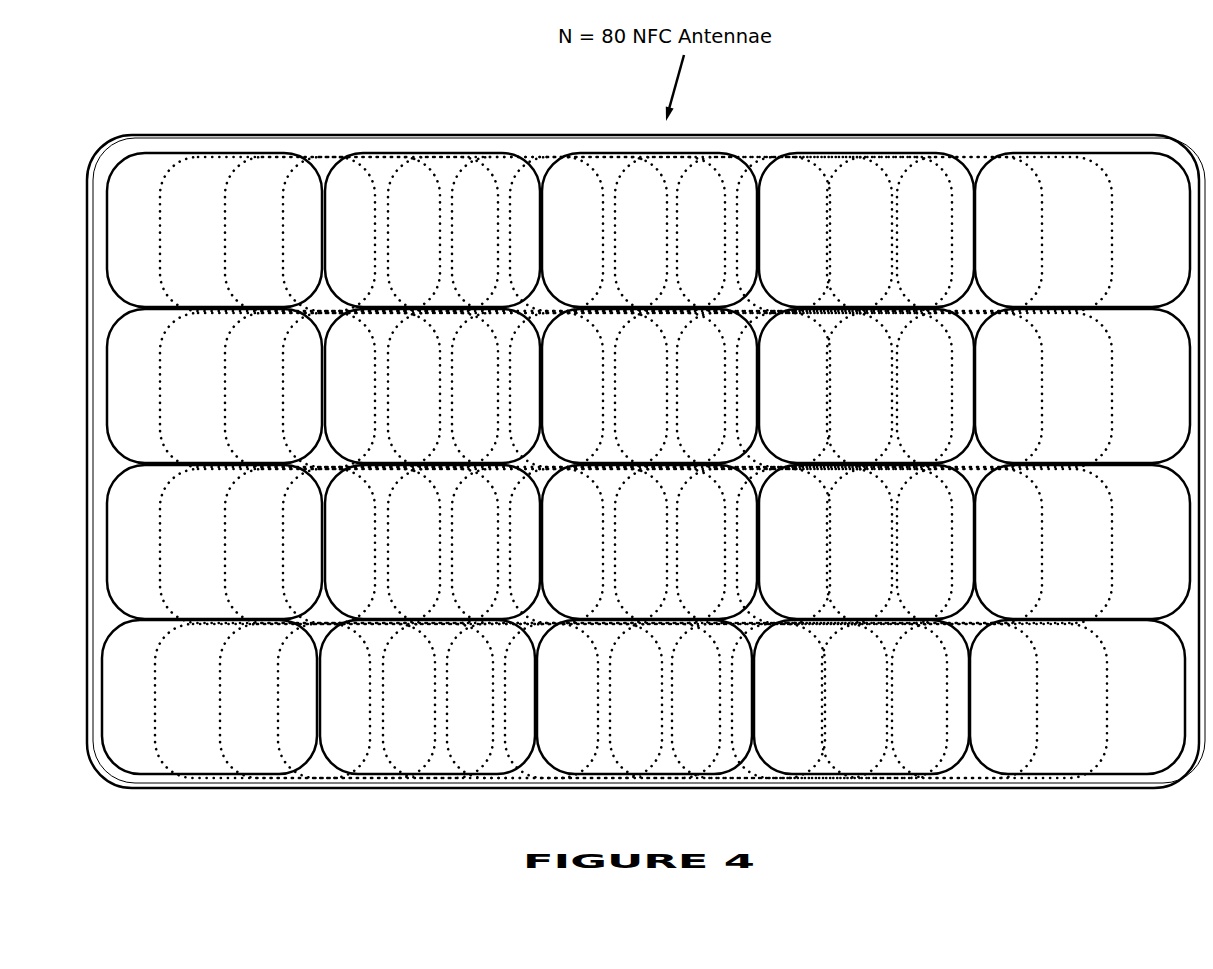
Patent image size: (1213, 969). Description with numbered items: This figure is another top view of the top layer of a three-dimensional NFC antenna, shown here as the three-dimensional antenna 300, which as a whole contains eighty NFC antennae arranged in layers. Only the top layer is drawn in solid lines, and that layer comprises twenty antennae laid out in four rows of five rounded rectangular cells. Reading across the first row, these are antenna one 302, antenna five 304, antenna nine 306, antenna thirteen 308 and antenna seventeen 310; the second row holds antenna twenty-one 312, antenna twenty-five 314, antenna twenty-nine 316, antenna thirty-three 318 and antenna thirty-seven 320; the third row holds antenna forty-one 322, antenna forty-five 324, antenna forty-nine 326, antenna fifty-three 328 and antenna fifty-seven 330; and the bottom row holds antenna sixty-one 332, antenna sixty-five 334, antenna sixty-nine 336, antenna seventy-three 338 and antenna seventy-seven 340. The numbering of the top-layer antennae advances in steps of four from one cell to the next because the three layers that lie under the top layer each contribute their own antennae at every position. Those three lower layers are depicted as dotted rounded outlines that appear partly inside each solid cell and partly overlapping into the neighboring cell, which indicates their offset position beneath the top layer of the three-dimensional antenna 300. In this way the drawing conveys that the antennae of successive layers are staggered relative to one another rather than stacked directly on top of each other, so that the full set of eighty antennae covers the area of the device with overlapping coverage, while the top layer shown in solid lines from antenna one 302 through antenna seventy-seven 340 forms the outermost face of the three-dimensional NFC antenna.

The three-dimensional antenna 300 is at (352, 126).
The antenna 1 302 is at (273, 188).
The antenna 5 304 is at (503, 295).
The antenna 9 306 is at (708, 188).
The antenna 13 308 is at (946, 295).
The antenna 17 310 is at (1151, 188).
The antenna 21 312 is at (286, 344).
The antenna 25 314 is at (516, 451).
The antenna 29 316 is at (721, 344).
The antenna 33 318 is at (946, 451).
The antenna 37 320 is at (1151, 344).
The antenna 41 322 is at (286, 500).
The antenna 45 324 is at (516, 607).
The antenna 49 326 is at (721, 500).
The antenna 53 328 is at (946, 607).
The antenna 57 330 is at (1151, 500).
The antenna 61 332 is at (281, 655).
The antenna 65 334 is at (511, 762).
The antenna 69 336 is at (716, 655).
The antenna 73 338 is at (941, 762).
The antenna 77 340 is at (1146, 655).